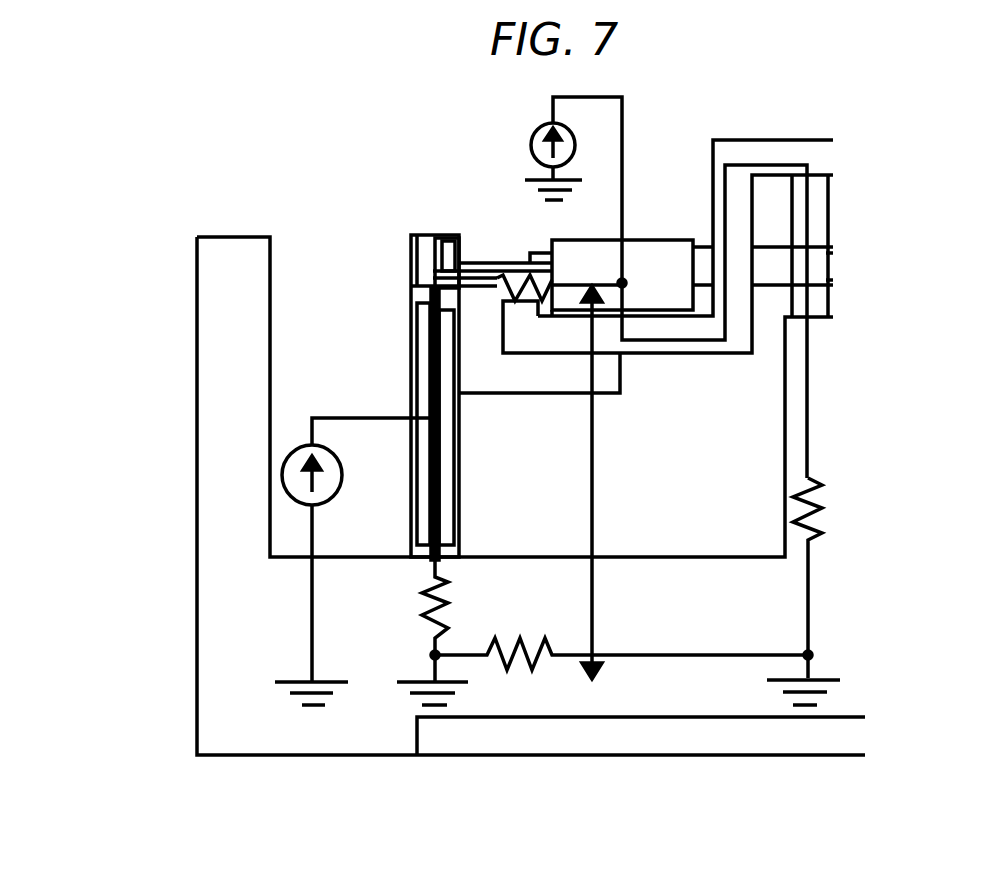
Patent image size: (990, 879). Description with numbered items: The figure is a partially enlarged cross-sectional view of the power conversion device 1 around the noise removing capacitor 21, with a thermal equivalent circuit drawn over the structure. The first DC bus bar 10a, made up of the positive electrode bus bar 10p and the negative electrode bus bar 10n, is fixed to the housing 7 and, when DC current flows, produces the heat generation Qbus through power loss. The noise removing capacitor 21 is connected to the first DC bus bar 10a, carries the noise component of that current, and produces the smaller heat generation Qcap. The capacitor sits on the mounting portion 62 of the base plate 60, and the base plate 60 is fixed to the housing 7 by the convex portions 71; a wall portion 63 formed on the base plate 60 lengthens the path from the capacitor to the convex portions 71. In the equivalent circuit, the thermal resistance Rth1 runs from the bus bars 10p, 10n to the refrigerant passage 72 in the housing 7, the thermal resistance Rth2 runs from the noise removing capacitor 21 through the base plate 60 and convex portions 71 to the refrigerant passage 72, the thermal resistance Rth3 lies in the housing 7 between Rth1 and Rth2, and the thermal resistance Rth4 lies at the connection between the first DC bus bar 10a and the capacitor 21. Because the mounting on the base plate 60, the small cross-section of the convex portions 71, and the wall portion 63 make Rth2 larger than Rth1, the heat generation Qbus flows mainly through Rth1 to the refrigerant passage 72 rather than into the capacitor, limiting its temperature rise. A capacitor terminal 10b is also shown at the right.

The power conversion device 1 is at (171, 122).
The housing 7 is at (298, 755).
The first DC bus bar 10a is at (414, 229).
The capacitor terminal 10b is at (830, 270).
The negative electrode bus bar 10n is at (427, 368).
The positive electrode bus bar 10p is at (447, 358).
The noise removing capacitor 21 is at (658, 238).
The base plate 60 is at (753, 138).
The mounting portion 62 is at (680, 355).
The wall portion 63 is at (817, 323).
The convex portions 71 is at (830, 203).
The refrigerant passage 72 is at (450, 743).
The heat generation of the noise removing capacitor Qcap is at (530, 141).
The heat generation of the first DC bus bar Qbus is at (283, 473).
The thermal resistance Rth1 is at (427, 605).
The thermal resistance Rth2 is at (828, 523).
The thermal resistance Rth3 is at (523, 680).
The thermal resistance Rth4 is at (518, 266).